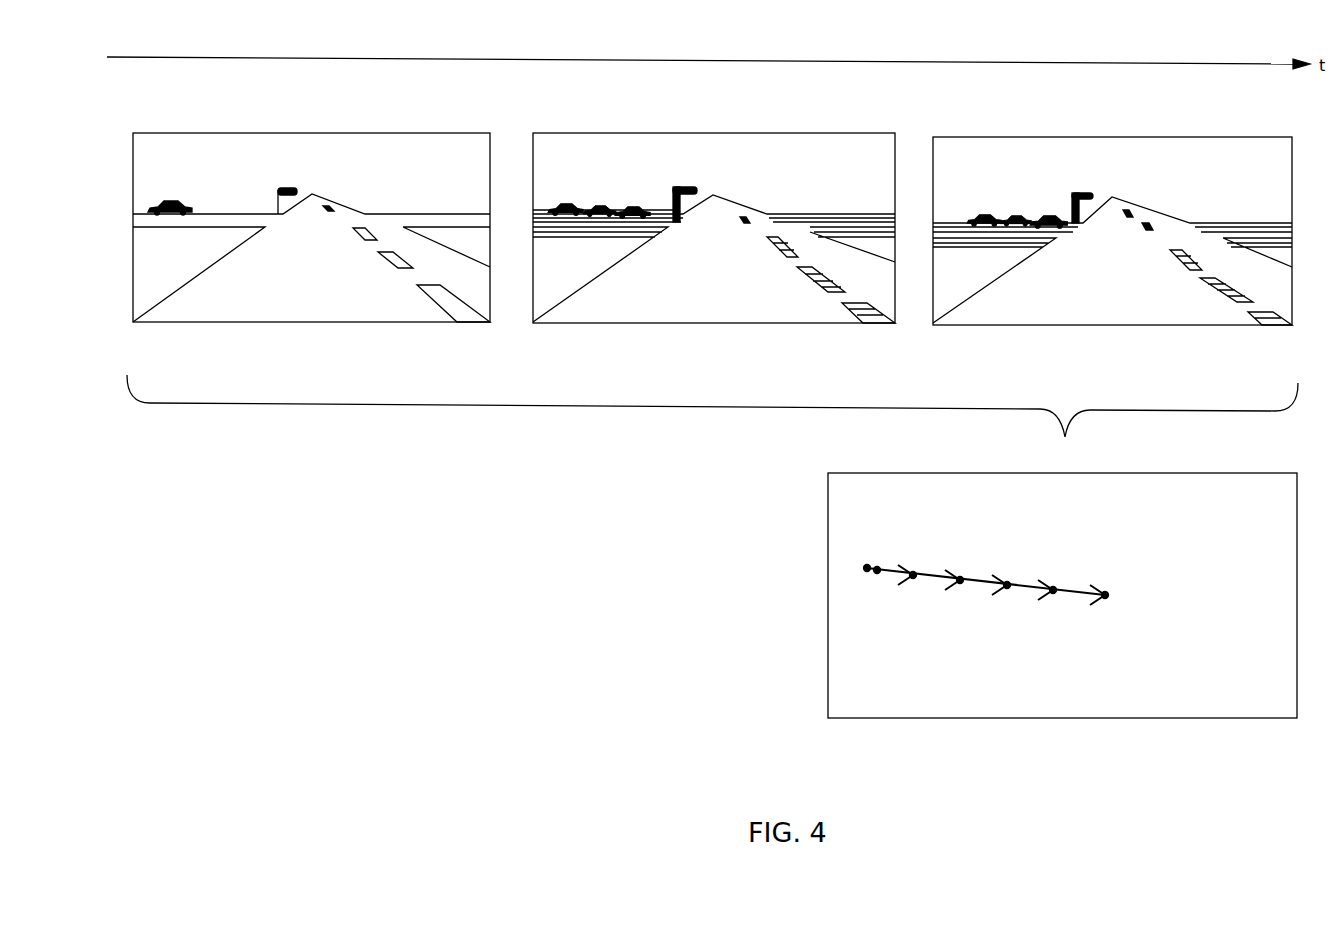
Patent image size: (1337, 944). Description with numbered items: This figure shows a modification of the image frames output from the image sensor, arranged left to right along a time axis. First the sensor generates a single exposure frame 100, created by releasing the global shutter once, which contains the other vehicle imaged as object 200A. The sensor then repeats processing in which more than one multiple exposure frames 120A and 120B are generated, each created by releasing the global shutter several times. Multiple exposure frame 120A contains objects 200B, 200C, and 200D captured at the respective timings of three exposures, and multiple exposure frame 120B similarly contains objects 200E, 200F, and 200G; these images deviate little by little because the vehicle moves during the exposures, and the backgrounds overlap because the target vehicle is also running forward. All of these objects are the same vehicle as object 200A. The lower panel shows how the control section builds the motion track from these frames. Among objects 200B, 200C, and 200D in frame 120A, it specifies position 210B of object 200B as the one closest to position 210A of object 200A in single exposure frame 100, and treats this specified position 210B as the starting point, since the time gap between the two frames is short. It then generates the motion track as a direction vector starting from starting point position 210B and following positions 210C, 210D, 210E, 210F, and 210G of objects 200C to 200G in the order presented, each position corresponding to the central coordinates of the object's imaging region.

The single exposure frame 100 is at (202, 133).
The multiple exposure frame 120A is at (608, 133).
The multiple exposure frame 120B is at (997, 137).
The object 200A is at (167, 199).
The object 200B is at (565, 200).
The object 200C is at (598, 204).
The object 200D is at (630, 204).
The object 200E is at (982, 213).
The object 200F is at (1013, 213).
The object 200G is at (1047, 213).
The position 210A is at (865, 566).
The starting point position 210B is at (877, 568).
The position 210C is at (913, 573).
The position 210D is at (960, 578).
The position 210E is at (1007, 583).
The position 210F is at (1053, 588).
The position 210G is at (1105, 593).